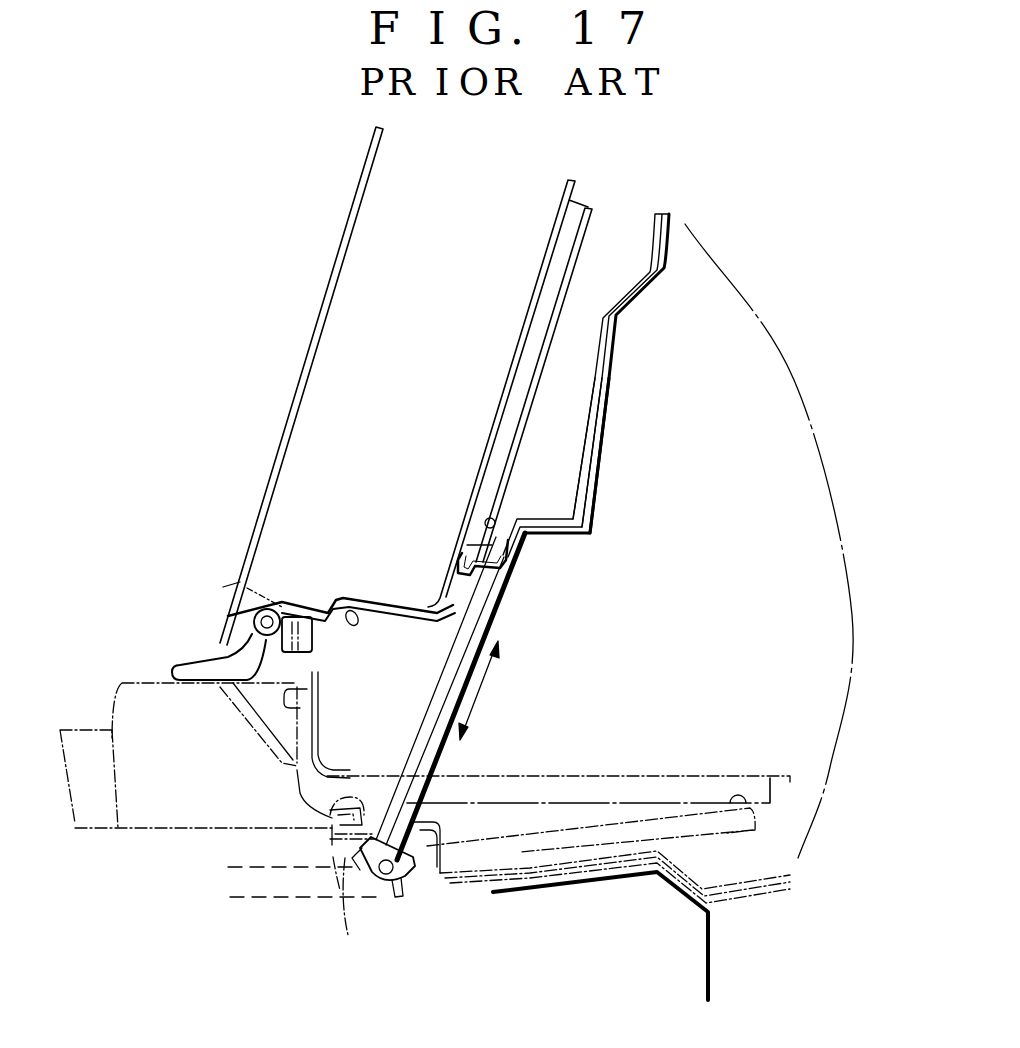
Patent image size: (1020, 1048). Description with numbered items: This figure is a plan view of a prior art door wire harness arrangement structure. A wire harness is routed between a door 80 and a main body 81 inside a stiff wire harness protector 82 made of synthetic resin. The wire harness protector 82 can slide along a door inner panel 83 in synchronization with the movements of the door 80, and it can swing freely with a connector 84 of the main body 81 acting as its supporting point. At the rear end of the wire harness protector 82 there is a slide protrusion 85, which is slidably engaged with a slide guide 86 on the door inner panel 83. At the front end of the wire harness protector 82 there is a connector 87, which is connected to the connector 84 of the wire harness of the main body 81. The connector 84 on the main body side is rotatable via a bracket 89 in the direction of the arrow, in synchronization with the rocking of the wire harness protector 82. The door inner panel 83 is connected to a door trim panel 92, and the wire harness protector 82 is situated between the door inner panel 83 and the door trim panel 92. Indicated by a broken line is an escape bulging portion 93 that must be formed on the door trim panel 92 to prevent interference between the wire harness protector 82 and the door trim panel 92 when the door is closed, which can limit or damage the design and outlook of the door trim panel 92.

The door 80 is at (326, 263).
The main body 81 is at (709, 945).
The wire harness protector 82 is at (487, 637).
The door inner panel 83 is at (573, 197).
The connector 84 is at (420, 857).
The slide protrusion 85 is at (486, 521).
The slide guide 86 is at (572, 276).
The connector 87 is at (423, 850).
The bracket 89 is at (367, 850).
The door trim panel 92 is at (650, 306).
The escape bulging portion 93 is at (588, 508).